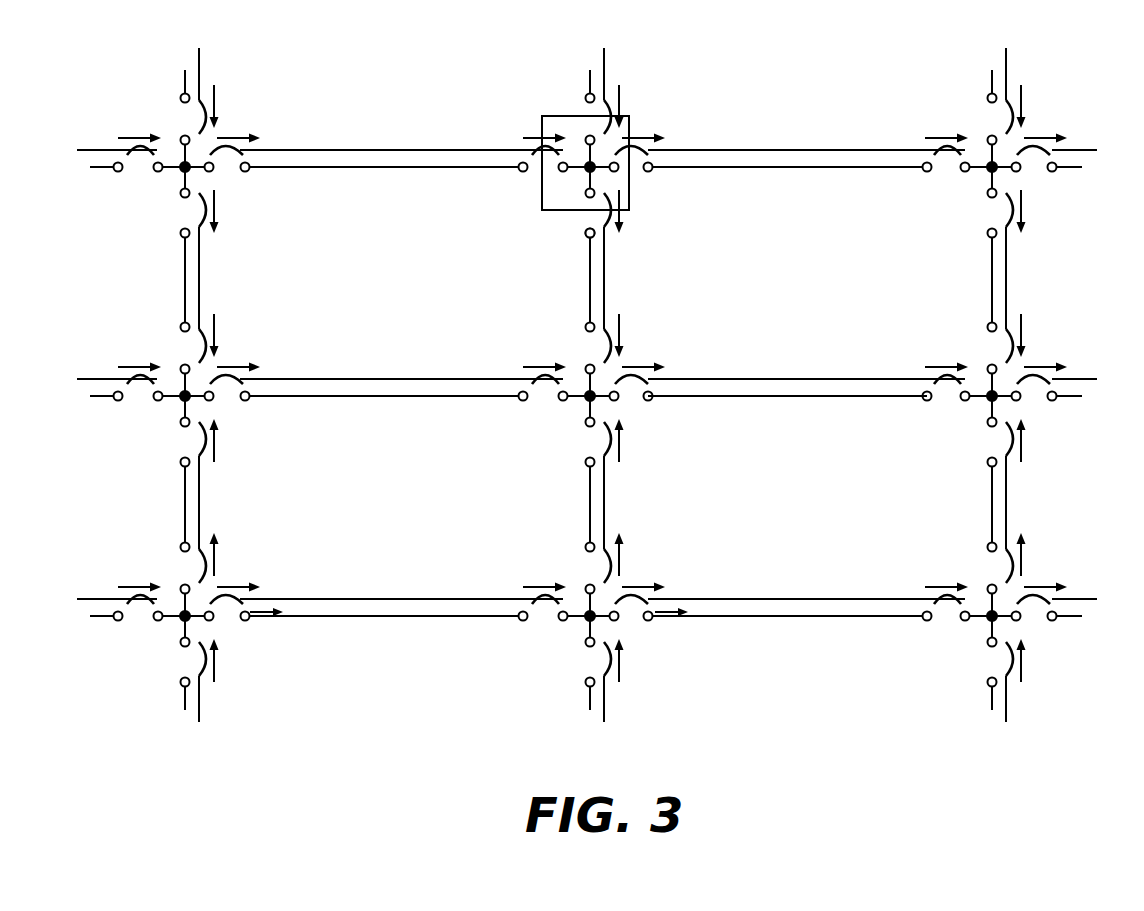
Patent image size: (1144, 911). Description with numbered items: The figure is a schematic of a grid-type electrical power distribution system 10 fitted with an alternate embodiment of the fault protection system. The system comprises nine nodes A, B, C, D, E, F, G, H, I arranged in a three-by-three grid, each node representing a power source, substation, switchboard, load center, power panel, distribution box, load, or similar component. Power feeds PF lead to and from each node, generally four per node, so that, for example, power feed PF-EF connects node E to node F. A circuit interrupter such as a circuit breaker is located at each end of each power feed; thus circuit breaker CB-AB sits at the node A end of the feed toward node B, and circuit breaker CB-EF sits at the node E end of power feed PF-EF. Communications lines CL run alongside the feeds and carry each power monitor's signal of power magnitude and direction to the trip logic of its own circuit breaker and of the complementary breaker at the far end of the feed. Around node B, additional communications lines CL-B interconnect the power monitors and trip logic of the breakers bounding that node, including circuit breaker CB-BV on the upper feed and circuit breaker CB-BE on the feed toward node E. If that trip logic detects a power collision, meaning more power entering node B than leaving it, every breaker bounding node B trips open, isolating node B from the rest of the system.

The power distribution system 10 is at (806, 757).
The communications line CL is at (100, 150).
The power feed PF is at (183, 78).
The communications line CL-B is at (572, 115).
The circuit breaker CB-AB is at (535, 140).
The circuit breaker CB-BV is at (608, 108).
The circuit breaker CB-BE is at (576, 230).
The circuit breaker CB-EF is at (648, 346).
The power feed PF-EF is at (717, 414).
The node A is at (202, 180).
The node B is at (605, 181).
The node C is at (1007, 180).
The node D is at (203, 410).
The node E is at (605, 410).
The node F is at (1007, 410).
The node G is at (203, 630).
The node H is at (607, 630).
The node I is at (1003, 629).